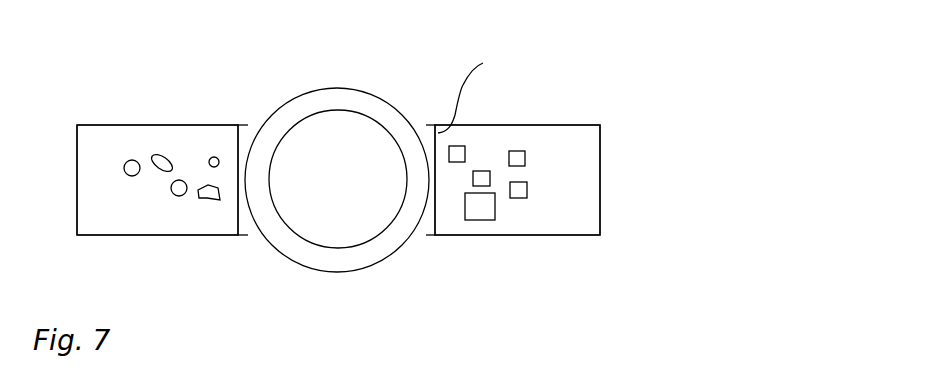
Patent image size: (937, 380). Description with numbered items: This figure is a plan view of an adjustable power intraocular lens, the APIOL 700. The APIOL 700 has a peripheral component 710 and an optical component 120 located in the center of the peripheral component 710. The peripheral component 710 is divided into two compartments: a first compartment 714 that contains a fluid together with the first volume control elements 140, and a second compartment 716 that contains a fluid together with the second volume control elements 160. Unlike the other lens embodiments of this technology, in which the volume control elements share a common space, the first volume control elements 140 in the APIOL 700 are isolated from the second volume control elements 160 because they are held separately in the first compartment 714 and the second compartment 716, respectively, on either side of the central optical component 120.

The APIOL 700 is at (716, 99).
The peripheral component 710 is at (103, 135).
The first compartment 714 is at (123, 207).
The second compartment 716 is at (578, 220).
The optical component 120 is at (362, 227).
The first volume control elements 140 is at (162, 160).
The second volume control elements 160 is at (518, 160).